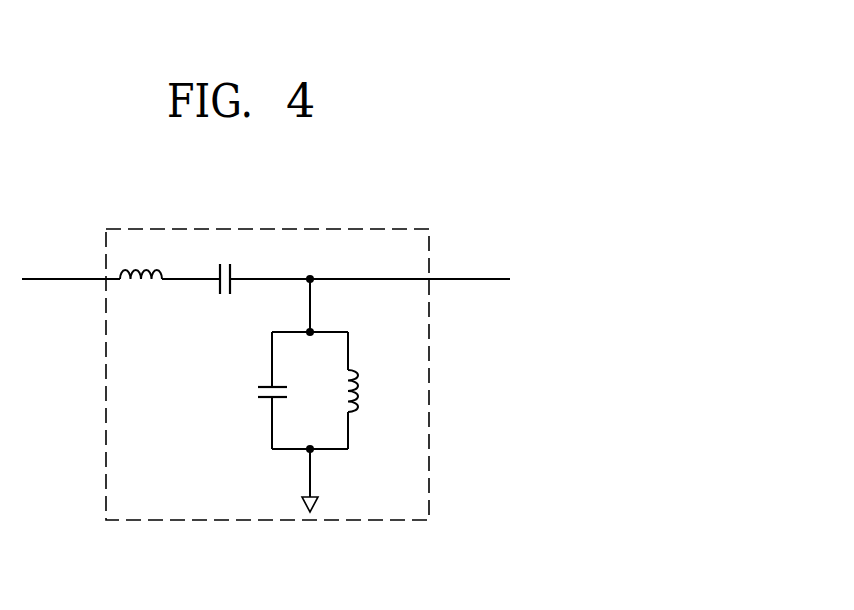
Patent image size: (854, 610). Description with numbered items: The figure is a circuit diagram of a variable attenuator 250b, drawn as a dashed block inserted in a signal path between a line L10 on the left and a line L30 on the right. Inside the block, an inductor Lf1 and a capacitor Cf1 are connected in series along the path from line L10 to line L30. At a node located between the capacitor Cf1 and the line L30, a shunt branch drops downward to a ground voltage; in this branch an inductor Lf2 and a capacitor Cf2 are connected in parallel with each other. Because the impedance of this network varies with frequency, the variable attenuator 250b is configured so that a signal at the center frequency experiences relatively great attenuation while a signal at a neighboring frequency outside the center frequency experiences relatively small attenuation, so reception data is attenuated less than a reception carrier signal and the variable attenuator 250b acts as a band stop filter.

The variable attenuator 250b is at (339, 229).
The line L10 is at (47, 279).
The line L30 is at (489, 279).
The inductor Lf1 is at (141, 259).
The capacitor Cf1 is at (224, 266).
The capacitor Cf2 is at (251, 390).
The inductor Lf2 is at (373, 390).